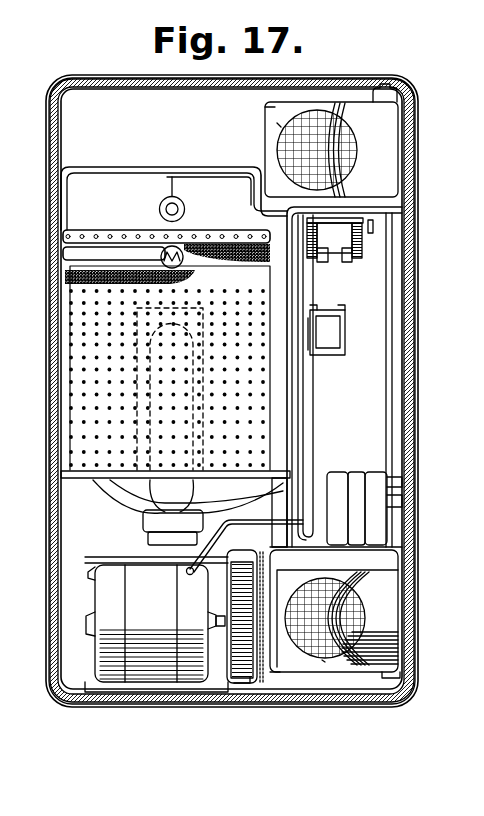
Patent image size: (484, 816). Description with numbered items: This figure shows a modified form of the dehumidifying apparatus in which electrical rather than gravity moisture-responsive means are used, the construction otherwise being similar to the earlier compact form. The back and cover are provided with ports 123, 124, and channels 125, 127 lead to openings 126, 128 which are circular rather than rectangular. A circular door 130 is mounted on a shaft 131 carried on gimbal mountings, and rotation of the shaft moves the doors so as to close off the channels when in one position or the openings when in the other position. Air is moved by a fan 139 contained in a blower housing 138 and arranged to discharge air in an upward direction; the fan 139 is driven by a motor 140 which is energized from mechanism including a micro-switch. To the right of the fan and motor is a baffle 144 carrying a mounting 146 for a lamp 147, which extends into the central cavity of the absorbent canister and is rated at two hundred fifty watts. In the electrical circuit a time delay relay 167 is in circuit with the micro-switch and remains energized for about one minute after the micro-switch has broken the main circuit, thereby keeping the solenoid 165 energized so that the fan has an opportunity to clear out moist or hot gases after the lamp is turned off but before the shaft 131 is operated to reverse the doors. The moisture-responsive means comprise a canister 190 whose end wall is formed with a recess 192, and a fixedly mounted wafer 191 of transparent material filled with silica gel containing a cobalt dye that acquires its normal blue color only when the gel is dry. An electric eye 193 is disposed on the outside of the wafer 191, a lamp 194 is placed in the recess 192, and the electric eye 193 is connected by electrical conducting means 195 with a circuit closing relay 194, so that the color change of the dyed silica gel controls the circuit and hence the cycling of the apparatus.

The port 123 is at (310, 574).
The port 124 is at (305, 122).
The channel 125 is at (281, 106).
The opening 126 is at (283, 123).
The channel 127 is at (331, 139).
The opening 128 is at (338, 124).
The circular door 130 is at (333, 177).
The shaft 131 is at (393, 402).
The blower housing 138 is at (240, 676).
The fan 139 is at (236, 681).
The motor 140 is at (162, 621).
The baffle 144 is at (131, 499).
The mounting 146 is at (148, 532).
The lamp 147 is at (180, 490).
The solenoid 165 is at (332, 482).
The time delay relay 167 is at (335, 261).
The canister 190 is at (78, 353).
The wafer 191 is at (125, 210).
The recess 192 is at (185, 206).
The electric eye 193 is at (161, 257).
The lamp and circuit closing relay 194 is at (323, 331).
The electrical conducting means 195 is at (236, 144).